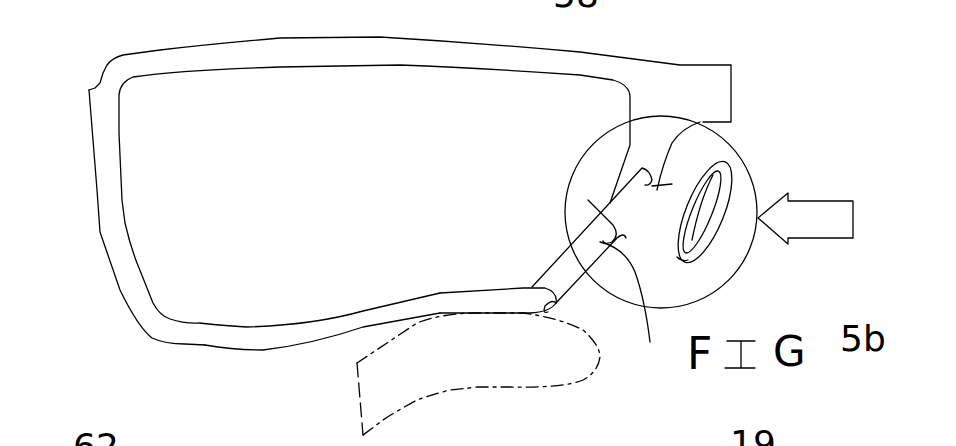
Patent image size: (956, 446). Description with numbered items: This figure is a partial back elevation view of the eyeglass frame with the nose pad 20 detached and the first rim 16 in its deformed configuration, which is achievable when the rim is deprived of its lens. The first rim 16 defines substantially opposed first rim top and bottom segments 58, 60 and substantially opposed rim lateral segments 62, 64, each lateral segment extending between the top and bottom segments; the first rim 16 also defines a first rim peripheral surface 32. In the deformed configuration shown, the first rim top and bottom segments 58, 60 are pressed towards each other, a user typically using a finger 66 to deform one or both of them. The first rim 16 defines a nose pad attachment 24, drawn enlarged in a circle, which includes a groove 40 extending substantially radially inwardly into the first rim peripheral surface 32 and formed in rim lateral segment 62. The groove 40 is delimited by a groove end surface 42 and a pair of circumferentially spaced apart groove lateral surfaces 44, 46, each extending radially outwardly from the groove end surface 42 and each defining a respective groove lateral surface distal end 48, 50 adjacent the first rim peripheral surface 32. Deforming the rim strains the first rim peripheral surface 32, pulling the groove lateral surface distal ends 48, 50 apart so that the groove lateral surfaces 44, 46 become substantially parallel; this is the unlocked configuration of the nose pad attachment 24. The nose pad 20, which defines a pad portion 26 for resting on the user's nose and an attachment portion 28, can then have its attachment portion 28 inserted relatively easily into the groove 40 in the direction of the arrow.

The first rim 16 is at (248, 248).
The nose pad 20 is at (727, 175).
The nose pad attachment 24 is at (706, 306).
The pad portion 26 is at (677, 257).
The attachment portion 28 is at (712, 223).
The first rim peripheral surface 32 is at (530, 286).
The groove 40 is at (746, 255).
The groove end surface 42 is at (629, 198).
The groove lateral surface 44 is at (648, 183).
The groove lateral surface 46 is at (602, 240).
The groove lateral surface distal end 48 is at (660, 188).
The groove lateral surface distal end 50 is at (630, 317).
The first rim top segment 58 is at (232, 50).
The first rim bottom segment 60 is at (322, 360).
The rim lateral segment 62 is at (628, 178).
The rim lateral segment 64 is at (104, 222).
The finger 66 is at (480, 387).